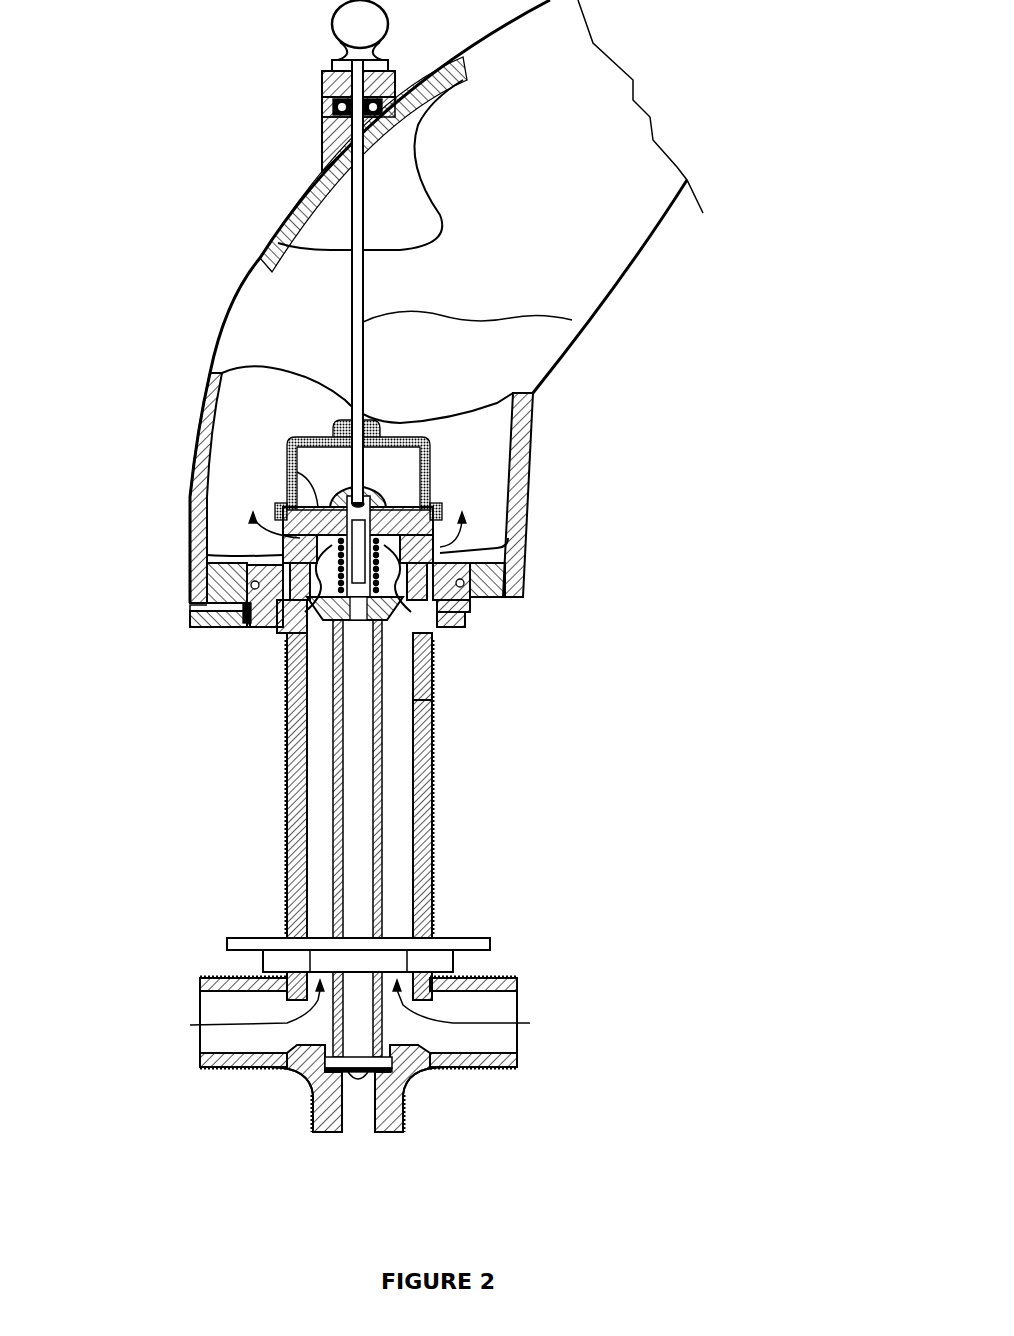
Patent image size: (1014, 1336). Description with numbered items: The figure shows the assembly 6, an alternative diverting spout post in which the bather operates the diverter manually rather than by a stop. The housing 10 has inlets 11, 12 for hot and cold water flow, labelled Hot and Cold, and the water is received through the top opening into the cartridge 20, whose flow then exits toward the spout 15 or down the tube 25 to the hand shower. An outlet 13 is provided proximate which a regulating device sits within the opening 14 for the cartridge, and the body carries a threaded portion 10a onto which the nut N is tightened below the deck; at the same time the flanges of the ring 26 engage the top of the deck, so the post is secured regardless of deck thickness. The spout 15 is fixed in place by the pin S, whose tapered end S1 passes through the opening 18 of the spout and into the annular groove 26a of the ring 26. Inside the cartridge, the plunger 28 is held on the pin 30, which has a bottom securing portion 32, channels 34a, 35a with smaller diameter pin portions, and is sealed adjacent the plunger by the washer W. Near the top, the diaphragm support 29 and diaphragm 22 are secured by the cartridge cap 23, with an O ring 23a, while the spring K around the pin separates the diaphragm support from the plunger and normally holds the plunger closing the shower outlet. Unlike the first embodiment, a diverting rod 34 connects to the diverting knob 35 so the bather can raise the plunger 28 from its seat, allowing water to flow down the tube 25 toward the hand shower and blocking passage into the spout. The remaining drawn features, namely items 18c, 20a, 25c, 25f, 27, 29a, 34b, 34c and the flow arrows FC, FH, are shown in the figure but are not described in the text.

The assembly 6 is at (625, 799).
The housing 10 is at (450, 832).
The threaded portion 10a is at (430, 800).
The inlet 11 is at (517, 978).
The inlet 12 is at (207, 977).
The outlet 13 is at (397, 1133).
The opening 14 is at (307, 1097).
The spout 15 is at (643, 227).
The opening 18 is at (190, 627).
The stem boss 18c is at (323, 155).
The cartridge 20 is at (287, 557).
The threaded end of valve body 20a is at (440, 653).
The diaphragm 22 is at (438, 462).
The cartridge cap 23 is at (313, 437).
The O ring 23a is at (343, 421).
The tube 25 is at (383, 748).
The flange 25c is at (300, 633).
The fillet 25f is at (313, 1070).
The ring 26 is at (467, 628).
The annular groove 26a is at (463, 608).
The washer 27 is at (500, 580).
The plunger 28 is at (335, 625).
The diaphragm support 29 is at (400, 490).
The piston 29a is at (371, 500).
The pin 30 is at (430, 492).
The bottom securing portion 32 is at (390, 645).
The diverting rod 34 is at (572, 320).
The channel 34a is at (320, 78).
The bearing 34b is at (327, 90).
The stem end 34c is at (350, 500).
The diverting knob 35 is at (343, 18).
The channel 35a is at (323, 123).
The spring K is at (297, 472).
The cold water flow FC is at (265, 514).
The hot water flow FH is at (454, 517).
The washer W is at (223, 577).
The pin S is at (190, 607).
The tapered end S1 is at (247, 633).
The nut N is at (487, 935).
The cold water Cold is at (227, 1007).
The hot water Hot is at (488, 1007).